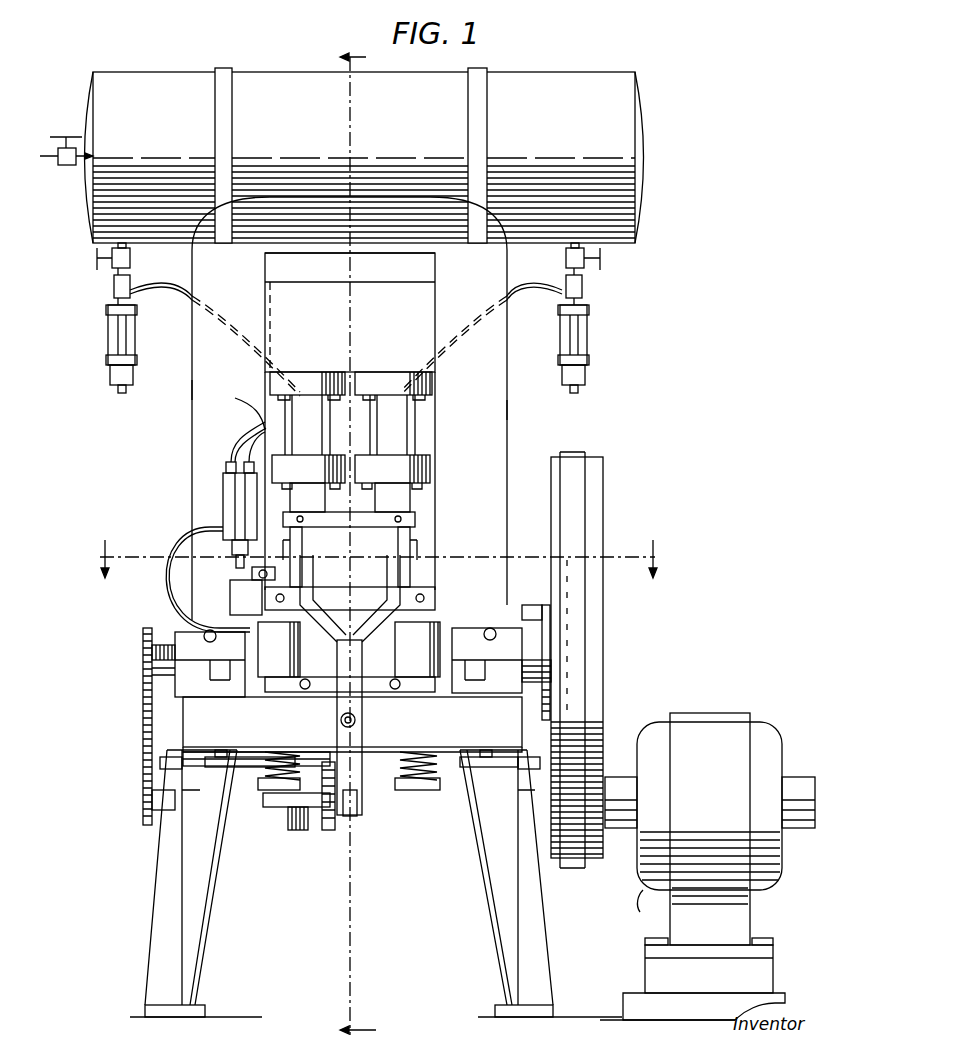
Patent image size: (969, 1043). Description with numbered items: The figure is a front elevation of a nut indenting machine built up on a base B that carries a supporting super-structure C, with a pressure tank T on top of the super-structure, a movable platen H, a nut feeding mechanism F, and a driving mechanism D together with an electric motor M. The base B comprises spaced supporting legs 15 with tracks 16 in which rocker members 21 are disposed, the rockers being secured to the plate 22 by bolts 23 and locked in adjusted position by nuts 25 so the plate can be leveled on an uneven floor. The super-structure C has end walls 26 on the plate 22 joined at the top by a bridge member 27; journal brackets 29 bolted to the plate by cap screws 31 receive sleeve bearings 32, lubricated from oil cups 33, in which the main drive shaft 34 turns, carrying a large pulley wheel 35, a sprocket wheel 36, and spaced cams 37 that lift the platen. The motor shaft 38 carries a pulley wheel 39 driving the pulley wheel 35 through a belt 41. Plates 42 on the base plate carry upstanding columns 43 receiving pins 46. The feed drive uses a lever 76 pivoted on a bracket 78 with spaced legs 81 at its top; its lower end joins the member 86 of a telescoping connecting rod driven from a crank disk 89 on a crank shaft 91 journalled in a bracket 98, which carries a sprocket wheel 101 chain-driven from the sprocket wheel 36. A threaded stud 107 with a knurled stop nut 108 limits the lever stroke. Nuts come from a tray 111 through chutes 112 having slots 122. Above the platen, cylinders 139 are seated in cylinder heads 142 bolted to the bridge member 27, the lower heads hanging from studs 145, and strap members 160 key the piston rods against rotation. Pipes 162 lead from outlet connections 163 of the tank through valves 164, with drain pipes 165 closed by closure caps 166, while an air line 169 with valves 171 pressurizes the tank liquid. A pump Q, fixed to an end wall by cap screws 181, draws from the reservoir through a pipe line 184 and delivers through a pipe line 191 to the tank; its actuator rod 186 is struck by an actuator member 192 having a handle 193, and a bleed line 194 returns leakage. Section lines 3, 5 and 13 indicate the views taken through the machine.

The pressure tank T is at (578, 80).
The supporting super-structure C is at (190, 430).
The electric motor M is at (740, 714).
The driving mechanism D is at (142, 705).
The liquid pump Q is at (223, 486).
The base B is at (160, 861).
The nut feeding mechanism F is at (418, 566).
The movable platen H is at (433, 599).
The section line 3 is at (358, 532).
The valve outlet 5 is at (62, 172).
The section line 13 is at (378, 557).
The supporting legs 15 is at (165, 945).
The tracks 16 is at (197, 1005).
The rocker members 21 is at (205, 908).
The plate 22 is at (352, 723).
The bolts 23 is at (225, 775).
The nuts 25 is at (160, 762).
The end walls 26 is at (192, 392).
The bridge member 27 is at (388, 212).
The journal brackets 29 is at (200, 640).
The cap screws 31 is at (220, 668).
The sleeve bearings 32 is at (152, 680).
The oil cups 33 is at (208, 667).
The main drive shaft 34 is at (152, 652).
The large pulley wheel 35 is at (598, 491).
The sprocket wheel 36 is at (143, 632).
The cams 37 is at (349, 648).
The motor shaft 38 is at (607, 800).
The pulley wheel 39 is at (606, 718).
The belt 41 is at (578, 622).
The plates 42 is at (257, 683).
The upstanding columns 43 is at (346, 656).
The pins 46 is at (420, 786).
The lever 76 is at (360, 795).
The bracket 78 is at (318, 690).
The spaced legs 81 is at (385, 600).
The member of telescoping connecting rod 86 is at (362, 805).
The crank disk 89 is at (328, 832).
The crank shaft 91 is at (270, 800).
The bracket 98 is at (298, 822).
The sprocket wheel 101 is at (152, 792).
The threaded stud 107 is at (362, 720).
The stop nut 108 is at (340, 720).
The tray 111 is at (420, 520).
The chutes 112 is at (316, 538).
The longitudinal slots 122 is at (306, 556).
The cylinders 139 is at (300, 437).
The cylinder heads 142 is at (358, 385).
The studs 145 is at (300, 387).
The strap members 160 is at (358, 507).
The pipes 162 is at (180, 290).
The outlet connections 163 is at (114, 290).
The valves 164 is at (97, 258).
The drain pipes 165 is at (108, 336).
The closure caps 166 is at (112, 372).
The air line 169 is at (58, 180).
The valves 171 is at (78, 157).
The cap screws 181 is at (233, 460).
The pipe line 184 is at (268, 480).
The actuator rod 186 is at (228, 560).
The pipe line 191 is at (272, 312).
The actuator member 192 is at (240, 584).
The handle 193 is at (175, 586).
The bleed line 194 is at (165, 536).